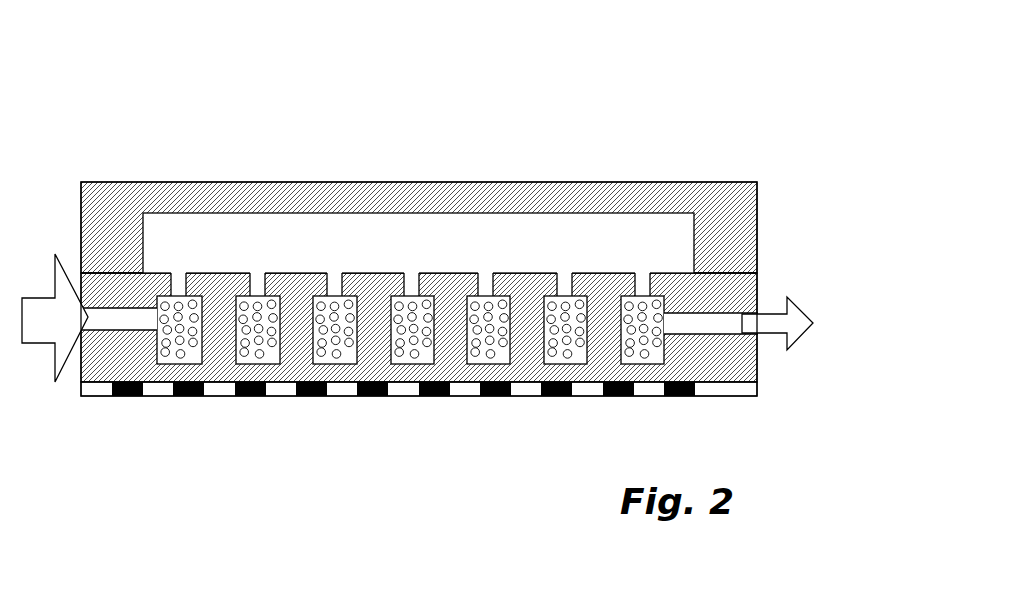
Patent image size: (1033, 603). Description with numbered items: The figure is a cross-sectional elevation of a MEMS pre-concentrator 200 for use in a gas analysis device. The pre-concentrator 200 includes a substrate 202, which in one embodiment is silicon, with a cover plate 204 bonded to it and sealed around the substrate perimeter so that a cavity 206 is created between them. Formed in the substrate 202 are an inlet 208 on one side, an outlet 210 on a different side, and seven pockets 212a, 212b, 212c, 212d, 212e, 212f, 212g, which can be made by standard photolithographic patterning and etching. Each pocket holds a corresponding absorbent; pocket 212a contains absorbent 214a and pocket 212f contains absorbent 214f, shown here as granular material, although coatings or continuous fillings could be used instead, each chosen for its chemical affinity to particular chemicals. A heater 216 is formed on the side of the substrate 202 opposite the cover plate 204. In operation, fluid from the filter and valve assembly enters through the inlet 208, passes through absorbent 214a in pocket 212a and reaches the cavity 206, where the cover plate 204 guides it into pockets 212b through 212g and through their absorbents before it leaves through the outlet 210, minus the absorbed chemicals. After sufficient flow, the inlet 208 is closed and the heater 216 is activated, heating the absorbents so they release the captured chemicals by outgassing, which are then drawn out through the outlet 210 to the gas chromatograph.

The MEMS pre-concentrator 200 is at (633, 60).
The substrate 202 is at (88, 360).
The cover plate 204 is at (222, 193).
The cavity 206 is at (377, 222).
The inlet 208 is at (92, 320).
The outlet 210 is at (725, 325).
The pocket 212a is at (176, 340).
The pocket 212b is at (240, 362).
The pocket 212c is at (316, 362).
The pocket 212d is at (396, 362).
The pocket 212e is at (472, 362).
The pocket 212f is at (584, 335).
The pocket 212g is at (653, 362).
The absorbent 214a is at (179, 300).
The absorbent 214f is at (564, 305).
The heater 216 is at (352, 410).